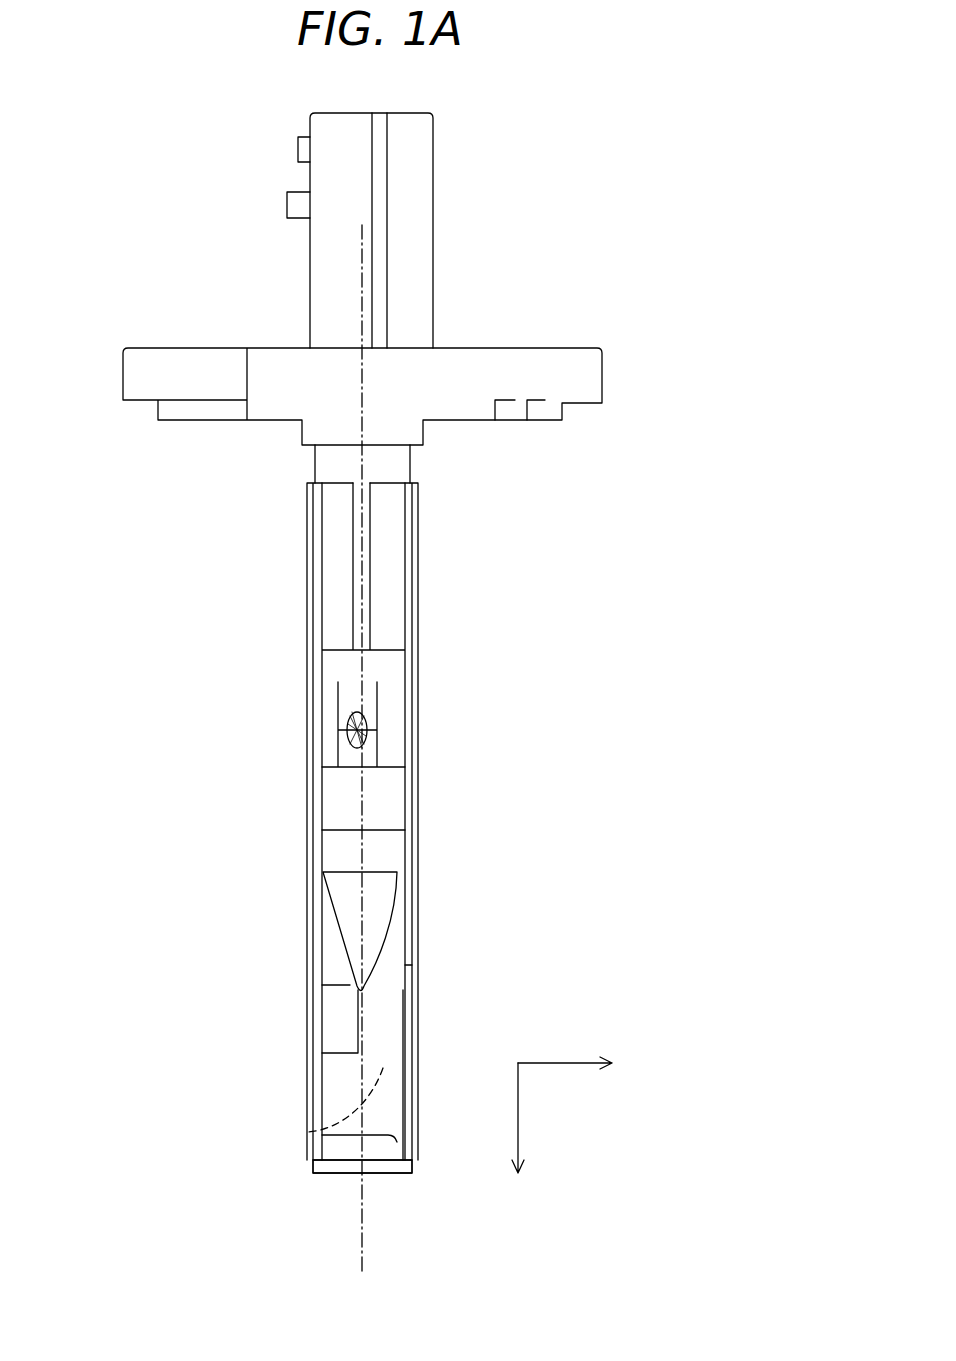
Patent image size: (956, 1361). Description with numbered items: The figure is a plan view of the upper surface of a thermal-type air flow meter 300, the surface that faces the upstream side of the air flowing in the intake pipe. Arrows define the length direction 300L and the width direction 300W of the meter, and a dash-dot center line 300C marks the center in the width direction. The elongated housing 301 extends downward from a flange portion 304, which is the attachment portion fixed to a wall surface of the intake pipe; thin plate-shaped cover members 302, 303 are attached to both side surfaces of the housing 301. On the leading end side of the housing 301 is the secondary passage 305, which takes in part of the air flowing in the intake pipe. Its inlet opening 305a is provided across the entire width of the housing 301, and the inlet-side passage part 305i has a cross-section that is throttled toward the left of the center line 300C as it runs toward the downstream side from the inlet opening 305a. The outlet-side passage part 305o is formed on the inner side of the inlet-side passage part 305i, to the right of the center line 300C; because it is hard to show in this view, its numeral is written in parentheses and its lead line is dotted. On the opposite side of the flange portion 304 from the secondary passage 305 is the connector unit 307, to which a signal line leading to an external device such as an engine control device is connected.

The thermal-type air flow meter 300 is at (574, 156).
The center line 300C is at (365, 1245).
The width direction 300W is at (575, 1063).
The length direction 300L is at (518, 1145).
The housing 301 is at (337, 1175).
The cover member 302 is at (307, 855).
The cover member 303 is at (418, 858).
The flange portion 304 is at (577, 377).
The secondary passage 305 is at (216, 1028).
The inlet-side passage part 305i is at (342, 1032).
The inlet opening 305a is at (340, 1088).
The outlet-side passage part 305o is at (307, 1132).
The connector unit 307 is at (413, 235).